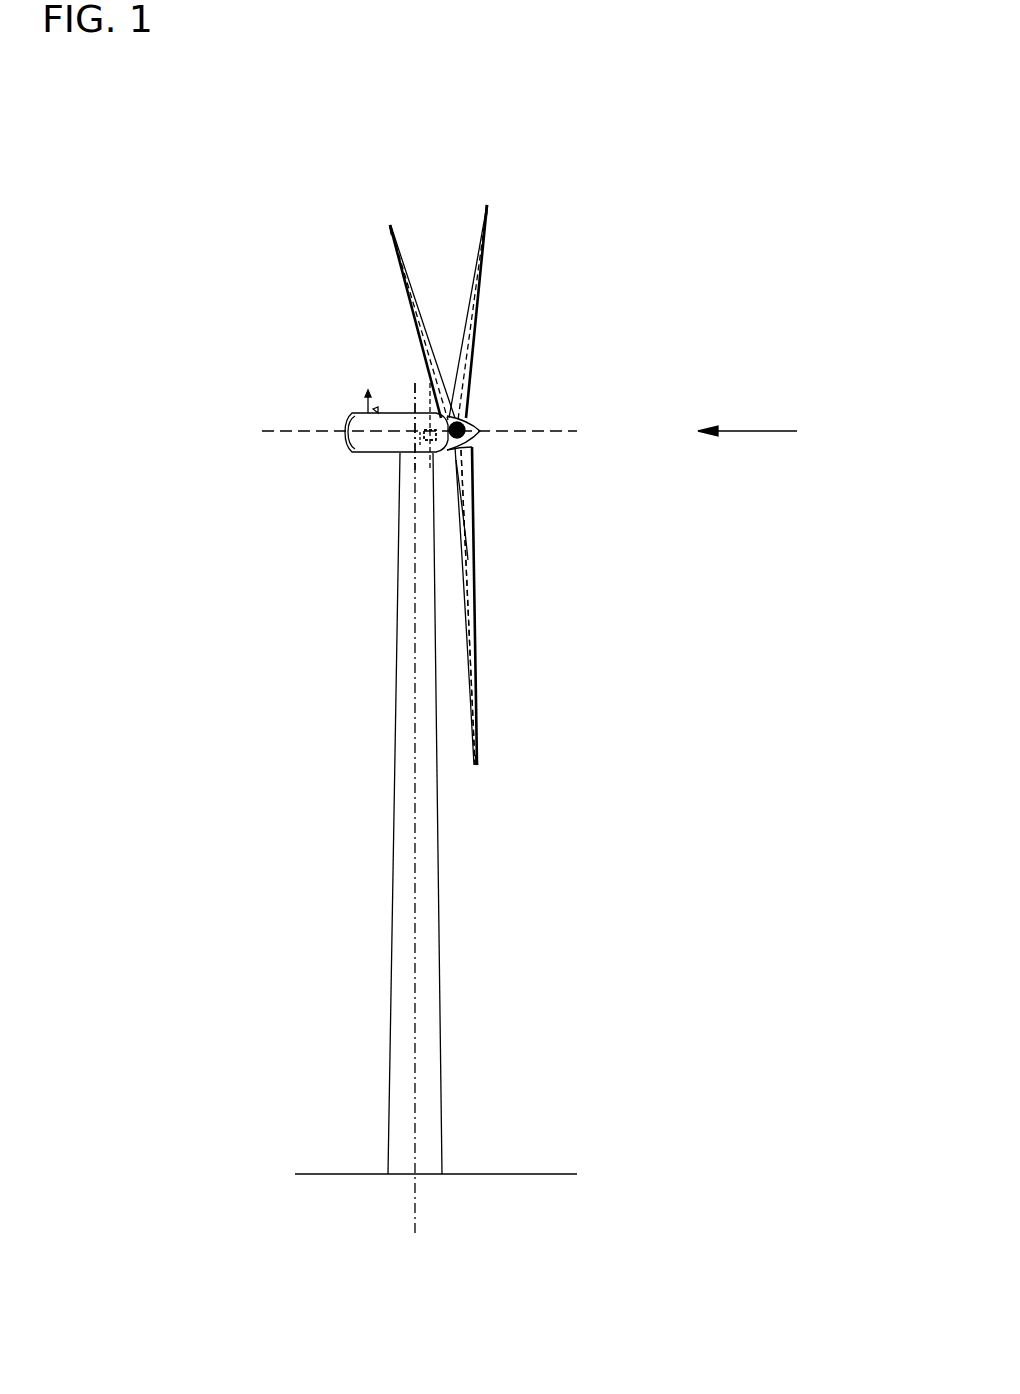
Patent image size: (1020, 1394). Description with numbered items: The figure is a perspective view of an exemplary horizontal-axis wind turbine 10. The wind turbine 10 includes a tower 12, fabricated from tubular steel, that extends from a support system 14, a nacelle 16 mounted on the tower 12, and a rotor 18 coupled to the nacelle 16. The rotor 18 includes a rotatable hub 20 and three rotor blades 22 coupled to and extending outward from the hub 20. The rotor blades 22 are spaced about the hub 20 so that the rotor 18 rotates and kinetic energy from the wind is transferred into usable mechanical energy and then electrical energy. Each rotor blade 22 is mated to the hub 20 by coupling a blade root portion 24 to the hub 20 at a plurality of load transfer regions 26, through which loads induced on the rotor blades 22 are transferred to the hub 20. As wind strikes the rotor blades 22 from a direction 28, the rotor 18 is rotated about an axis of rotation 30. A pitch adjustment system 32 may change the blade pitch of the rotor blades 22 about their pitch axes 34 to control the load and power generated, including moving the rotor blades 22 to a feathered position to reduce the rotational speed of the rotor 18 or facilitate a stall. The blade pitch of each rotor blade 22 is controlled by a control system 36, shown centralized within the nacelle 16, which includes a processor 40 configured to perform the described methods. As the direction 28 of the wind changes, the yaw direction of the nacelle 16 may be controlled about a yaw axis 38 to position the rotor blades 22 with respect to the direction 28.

The wind turbine 10 is at (190, 235).
The tower 12 is at (391, 960).
The support system 14 is at (348, 1173).
The nacelle 16 is at (372, 455).
The rotor 18 is at (490, 341).
The rotatable hub 20 is at (480, 426).
The rotor blade 22 is at (410, 292).
The blade root portion 24 is at (470, 531).
The load transfer region 26 is at (458, 460).
The direction 28 is at (766, 431).
The axis of rotation 30 is at (548, 437).
The pitch adjustment system 32 is at (458, 486).
The pitch axis 34 is at (388, 228).
The control system 36 is at (413, 476).
The yaw axis 38 is at (418, 846).
The processor 40 is at (427, 385).